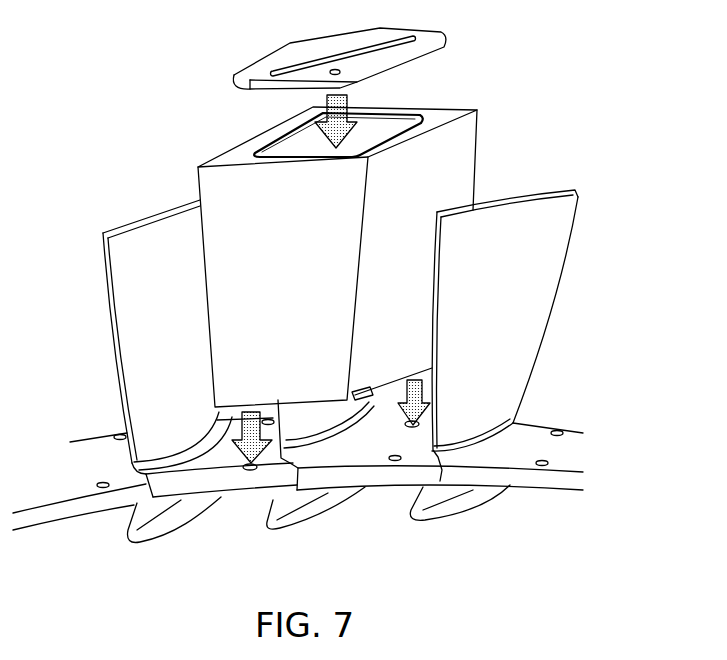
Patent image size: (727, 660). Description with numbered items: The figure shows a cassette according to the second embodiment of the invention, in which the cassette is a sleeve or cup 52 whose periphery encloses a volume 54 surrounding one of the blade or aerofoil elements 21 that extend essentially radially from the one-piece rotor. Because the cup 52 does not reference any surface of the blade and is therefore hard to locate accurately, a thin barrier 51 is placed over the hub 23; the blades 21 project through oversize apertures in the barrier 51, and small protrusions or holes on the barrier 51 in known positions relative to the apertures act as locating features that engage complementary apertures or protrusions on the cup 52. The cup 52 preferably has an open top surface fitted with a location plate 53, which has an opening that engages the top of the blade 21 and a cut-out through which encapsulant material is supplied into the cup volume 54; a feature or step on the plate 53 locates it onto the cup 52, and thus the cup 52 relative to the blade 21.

The blade or aerofoil element 21 is at (527, 288).
The hub 23 is at (370, 520).
The thin barrier 51 is at (97, 450).
The cup 52 is at (240, 158).
The location plate 53 is at (275, 63).
The volume 54 is at (403, 123).